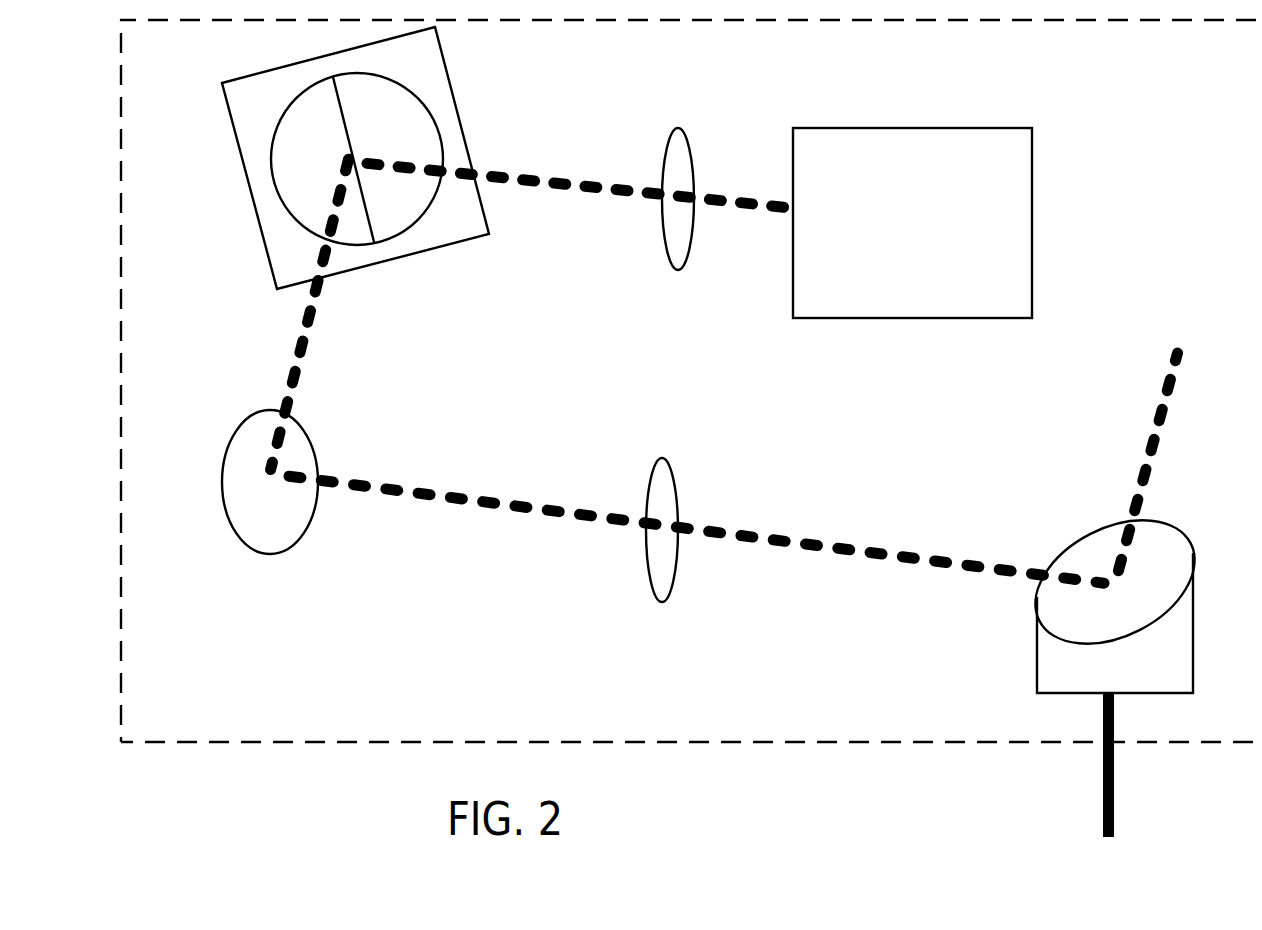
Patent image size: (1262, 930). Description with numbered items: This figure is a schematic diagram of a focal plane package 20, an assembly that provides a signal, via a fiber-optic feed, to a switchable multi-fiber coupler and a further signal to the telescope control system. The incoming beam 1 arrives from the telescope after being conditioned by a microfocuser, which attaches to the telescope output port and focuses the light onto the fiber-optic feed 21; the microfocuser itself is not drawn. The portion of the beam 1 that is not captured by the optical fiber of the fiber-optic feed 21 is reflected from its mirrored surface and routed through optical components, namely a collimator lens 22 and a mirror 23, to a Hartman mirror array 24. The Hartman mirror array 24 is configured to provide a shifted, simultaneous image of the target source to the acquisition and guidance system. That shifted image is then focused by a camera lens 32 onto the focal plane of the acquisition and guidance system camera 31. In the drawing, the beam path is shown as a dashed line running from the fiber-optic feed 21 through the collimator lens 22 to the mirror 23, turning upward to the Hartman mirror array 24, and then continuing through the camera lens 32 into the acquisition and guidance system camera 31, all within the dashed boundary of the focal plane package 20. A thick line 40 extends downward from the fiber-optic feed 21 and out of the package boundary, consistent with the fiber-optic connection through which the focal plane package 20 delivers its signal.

The beam 1 is at (1162, 422).
The focal plane package 20 is at (707, 742).
The fiber-optic feed 21 is at (1177, 645).
The collimator lens 22 is at (673, 573).
The mirror 23 is at (300, 537).
The Hartman mirror array 24 is at (405, 256).
The acquisition and guidance system camera 31 is at (897, 318).
The camera lens 32 is at (677, 270).
The optical fiber 40 is at (1108, 772).